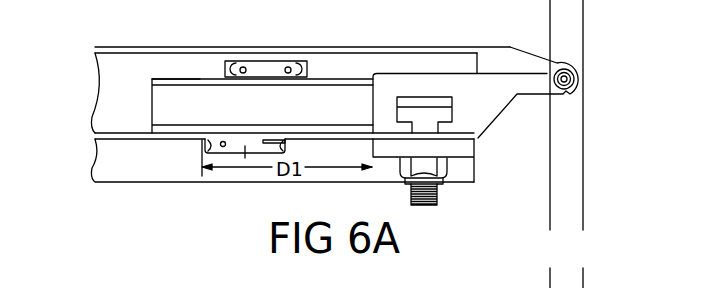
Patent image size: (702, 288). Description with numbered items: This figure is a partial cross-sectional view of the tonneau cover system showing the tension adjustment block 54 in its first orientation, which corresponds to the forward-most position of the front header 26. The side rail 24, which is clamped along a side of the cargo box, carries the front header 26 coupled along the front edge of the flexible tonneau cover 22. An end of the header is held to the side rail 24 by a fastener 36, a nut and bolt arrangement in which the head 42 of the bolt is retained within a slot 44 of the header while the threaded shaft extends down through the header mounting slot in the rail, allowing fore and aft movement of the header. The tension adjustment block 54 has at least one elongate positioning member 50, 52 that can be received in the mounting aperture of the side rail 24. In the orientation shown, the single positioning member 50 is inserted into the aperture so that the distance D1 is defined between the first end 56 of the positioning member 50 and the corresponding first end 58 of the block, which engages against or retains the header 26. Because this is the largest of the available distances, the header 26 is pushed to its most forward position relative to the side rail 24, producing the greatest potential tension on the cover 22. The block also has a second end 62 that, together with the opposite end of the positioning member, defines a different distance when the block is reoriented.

The tonneau cover 22 is at (192, 47).
The side rail 24 is at (120, 92).
The front header 26 is at (503, 88).
The fastener 36 is at (440, 186).
The head of the bolt 42 is at (445, 112).
The slot of the header 44 is at (445, 95).
The positioning member 50 is at (247, 147).
The positioning member 52 is at (267, 70).
The tension adjustment block 54 is at (174, 74).
The first end of the positioning member 56 is at (202, 142).
The first end of the tension adjustment block 58 is at (375, 91).
The second end of the tension adjustment block 62 is at (140, 107).